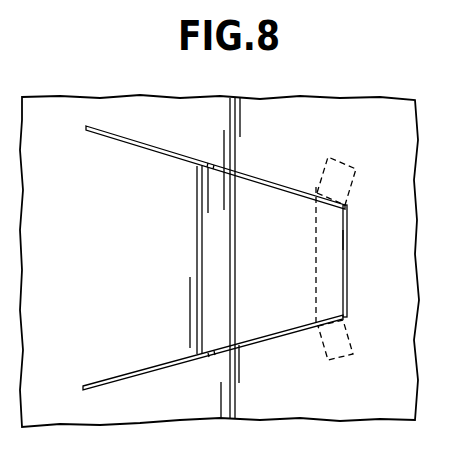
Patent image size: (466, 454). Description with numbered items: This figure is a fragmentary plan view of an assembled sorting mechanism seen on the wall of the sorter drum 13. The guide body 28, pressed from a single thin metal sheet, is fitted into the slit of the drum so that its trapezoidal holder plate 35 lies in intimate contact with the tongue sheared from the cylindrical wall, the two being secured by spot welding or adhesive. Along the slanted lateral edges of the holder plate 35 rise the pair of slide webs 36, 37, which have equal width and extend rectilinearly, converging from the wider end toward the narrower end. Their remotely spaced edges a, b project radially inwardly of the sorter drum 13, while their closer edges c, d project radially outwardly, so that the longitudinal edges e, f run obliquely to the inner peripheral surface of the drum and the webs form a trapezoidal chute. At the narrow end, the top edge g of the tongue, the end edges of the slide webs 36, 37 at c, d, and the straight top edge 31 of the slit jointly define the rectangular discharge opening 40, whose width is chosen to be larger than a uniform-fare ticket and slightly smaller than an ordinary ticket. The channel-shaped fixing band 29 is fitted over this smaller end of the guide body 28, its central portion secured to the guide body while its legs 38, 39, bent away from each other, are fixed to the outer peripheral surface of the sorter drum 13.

The sorter drum 13 is at (416, 254).
The guide body 28 is at (271, 344).
The fixing band 29 is at (318, 192).
The top edge 31 is at (348, 272).
The holder plate 35 is at (246, 287).
The slide web 36 is at (150, 370).
The slide web 37 is at (163, 153).
The leg 38 is at (341, 356).
The leg 39 is at (350, 166).
The discharge opening 40 is at (343, 243).
The remotely spaced edge a is at (83, 388).
The remotely spaced edge b is at (86, 128).
The closer edge c is at (348, 315).
The closer edge d is at (349, 207).
The longitudinal edge e is at (182, 355).
The longitudinal edge f is at (203, 163).
The top edge of the tongue g is at (348, 238).